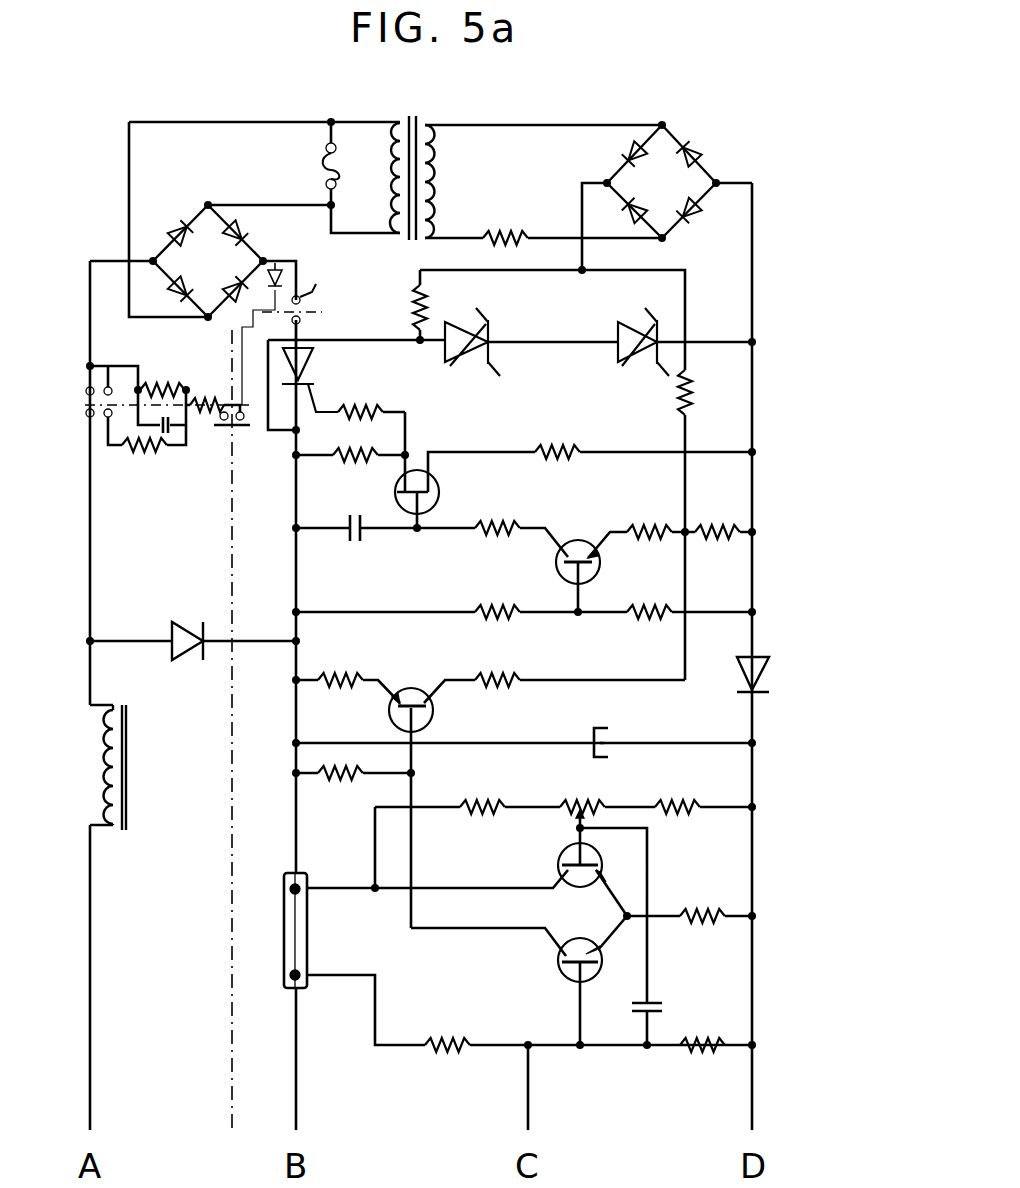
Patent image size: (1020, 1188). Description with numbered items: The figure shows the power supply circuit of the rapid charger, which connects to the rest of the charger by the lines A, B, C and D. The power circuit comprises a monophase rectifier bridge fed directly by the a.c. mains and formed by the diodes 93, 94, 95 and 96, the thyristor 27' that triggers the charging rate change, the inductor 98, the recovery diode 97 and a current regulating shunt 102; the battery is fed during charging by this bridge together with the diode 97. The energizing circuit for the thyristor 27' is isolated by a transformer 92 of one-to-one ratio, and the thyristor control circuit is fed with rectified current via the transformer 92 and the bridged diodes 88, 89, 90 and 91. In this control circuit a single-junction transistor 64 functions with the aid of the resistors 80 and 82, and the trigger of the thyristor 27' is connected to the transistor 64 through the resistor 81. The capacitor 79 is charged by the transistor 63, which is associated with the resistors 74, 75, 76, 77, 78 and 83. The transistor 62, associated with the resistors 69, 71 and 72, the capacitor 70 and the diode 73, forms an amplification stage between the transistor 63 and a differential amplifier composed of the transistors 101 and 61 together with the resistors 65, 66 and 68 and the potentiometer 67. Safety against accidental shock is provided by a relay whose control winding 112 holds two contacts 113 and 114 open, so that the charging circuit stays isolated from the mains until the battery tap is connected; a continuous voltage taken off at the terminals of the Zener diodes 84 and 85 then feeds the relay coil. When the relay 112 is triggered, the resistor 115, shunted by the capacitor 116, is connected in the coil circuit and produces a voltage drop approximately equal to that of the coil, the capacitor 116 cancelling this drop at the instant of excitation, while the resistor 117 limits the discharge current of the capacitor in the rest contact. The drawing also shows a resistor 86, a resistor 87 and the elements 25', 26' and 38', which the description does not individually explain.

The transformer 92 is at (443, 94).
The diode 93 is at (186, 232).
The diode 94 is at (244, 236).
The diode 95 is at (232, 288).
The diode 96 is at (172, 290).
The bridged diode 88 is at (628, 150).
The bridged diode 89 is at (692, 154).
The bridged diode 90 is at (694, 218).
The bridged diode 91 is at (626, 212).
The resistor 87 is at (522, 234).
The resistor 86 is at (418, 300).
The Zener diode 85 is at (464, 352).
The Zener diode 84 is at (638, 352).
The resistor 83 is at (690, 398).
The contact 113 is at (318, 296).
The thyristor 27' is at (321, 375).
The resistor 81 is at (352, 412).
The resistor 82 is at (362, 462).
The single-junction transistor 64 is at (438, 500).
The resistor 80 is at (566, 450).
The capacitor 79 is at (362, 536).
The resistor 78 is at (520, 526).
The transistor 63 is at (558, 576).
The resistor 77 is at (656, 530).
The resistor 76 is at (726, 530).
The resistor 75 is at (494, 610).
The resistor 74 is at (654, 610).
The recovery diode 97 is at (190, 636).
The inductor 98 is at (126, 822).
The resistor 72 is at (350, 678).
The resistor 71 is at (504, 678).
The transistor 62 is at (436, 718).
The diode 73 is at (764, 680).
The capacitor 70 is at (604, 746).
The resistor 69 is at (346, 780).
The resistor 68 is at (484, 804).
The potentiometer 67 is at (578, 804).
The resistor 66 is at (678, 804).
The transistor 61 is at (560, 862).
The resistor 65 is at (702, 912).
The transistor 101 is at (558, 962).
The current regulating shunt 102 is at (308, 948).
The capacitor 26' is at (665, 987).
The resistor 25' is at (463, 1025).
The resistor 38' is at (704, 1025).
The contact 114 is at (108, 384).
The resistor 115 is at (172, 376).
The control winding of safety relay 112 is at (206, 402).
The capacitor 116 is at (172, 428).
The resistor 117 is at (142, 452).